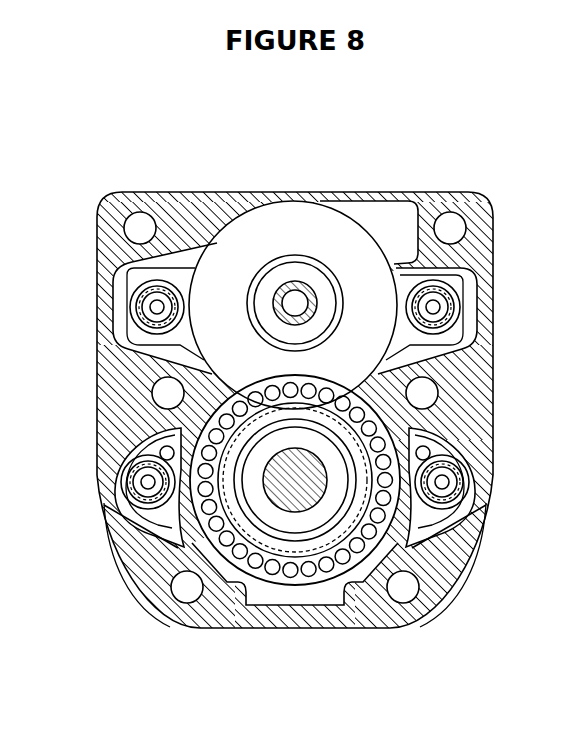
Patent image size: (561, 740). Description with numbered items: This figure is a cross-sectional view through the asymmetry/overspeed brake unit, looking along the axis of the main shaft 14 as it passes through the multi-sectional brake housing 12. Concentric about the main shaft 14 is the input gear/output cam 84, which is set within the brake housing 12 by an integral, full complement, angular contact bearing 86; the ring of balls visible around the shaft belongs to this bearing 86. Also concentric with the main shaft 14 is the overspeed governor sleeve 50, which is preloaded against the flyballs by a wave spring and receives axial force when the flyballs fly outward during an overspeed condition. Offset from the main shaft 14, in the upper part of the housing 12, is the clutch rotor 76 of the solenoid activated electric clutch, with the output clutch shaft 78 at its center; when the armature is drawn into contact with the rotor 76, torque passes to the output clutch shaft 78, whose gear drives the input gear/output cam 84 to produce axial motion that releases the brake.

The brake housing 12 is at (170, 207).
The main shaft 14 is at (303, 493).
The overspeed governor sleeve 50 is at (277, 537).
The clutch rotor 76 is at (283, 223).
The output clutch shaft 78 is at (299, 295).
The input gear/output cam 84 is at (195, 538).
The angular contact bearing 86 is at (330, 384).